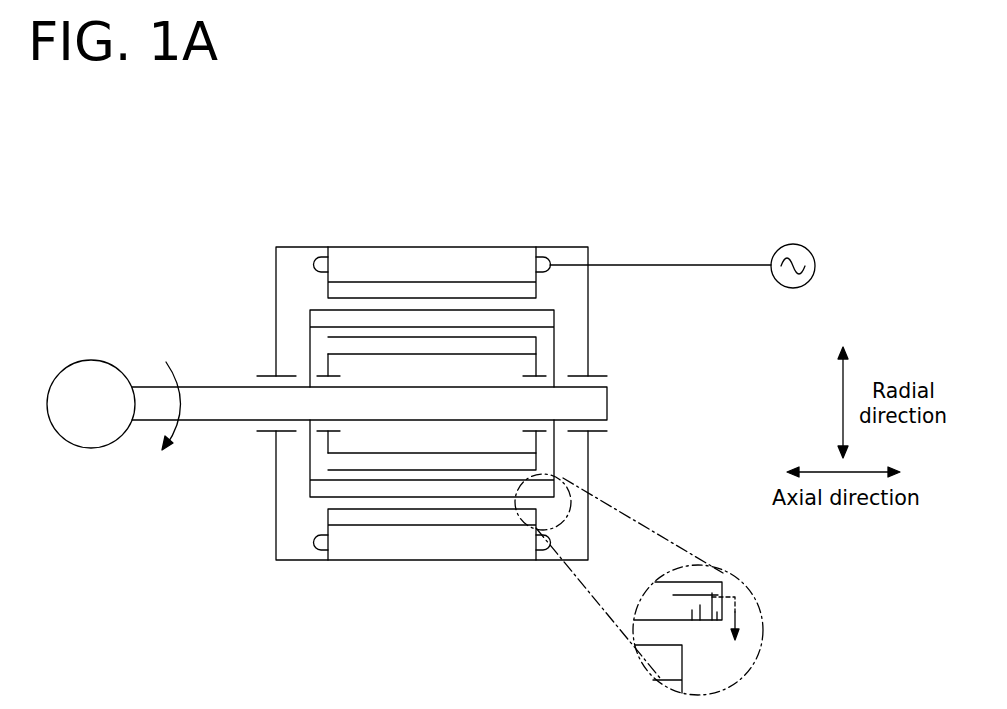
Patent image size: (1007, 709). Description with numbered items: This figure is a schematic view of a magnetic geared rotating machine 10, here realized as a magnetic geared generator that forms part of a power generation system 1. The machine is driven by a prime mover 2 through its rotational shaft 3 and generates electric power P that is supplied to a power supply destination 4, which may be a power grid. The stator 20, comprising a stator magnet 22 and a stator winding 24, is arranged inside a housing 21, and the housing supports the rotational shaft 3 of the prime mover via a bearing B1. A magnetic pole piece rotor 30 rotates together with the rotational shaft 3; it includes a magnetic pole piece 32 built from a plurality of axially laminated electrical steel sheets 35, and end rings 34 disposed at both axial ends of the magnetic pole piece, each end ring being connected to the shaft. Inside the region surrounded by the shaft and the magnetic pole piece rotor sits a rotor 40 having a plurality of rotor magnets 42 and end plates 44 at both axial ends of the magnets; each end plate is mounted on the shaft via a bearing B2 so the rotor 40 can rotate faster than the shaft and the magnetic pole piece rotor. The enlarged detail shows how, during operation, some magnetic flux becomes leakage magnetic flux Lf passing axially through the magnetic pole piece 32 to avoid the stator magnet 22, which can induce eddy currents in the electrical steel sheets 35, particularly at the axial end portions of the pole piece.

The power generation system 1 is at (728, 112).
The prime mover 2 is at (91, 359).
The rotational shaft 3 is at (221, 390).
The power supply destination 4 is at (793, 244).
The magnetic geared rotating machine 10 is at (427, 197).
The stator 20 is at (582, 189).
The housing 21 is at (276, 269).
The stator magnet 22 is at (509, 292).
The stator winding 24 is at (543, 247).
The magnetic pole piece rotor 30 is at (188, 518).
The magnetic pole piece 32 is at (310, 488).
The end ring 34 is at (310, 470).
The electrical steel sheet 35 is at (716, 622).
The rotor 40 is at (681, 302).
The rotor magnet 42 is at (538, 343).
The end plate 44 is at (538, 363).
The bearing B1 is at (267, 433).
The bearing B2 is at (545, 433).
The electric power P is at (708, 243).
The leakage magnetic flux Lf is at (755, 600).